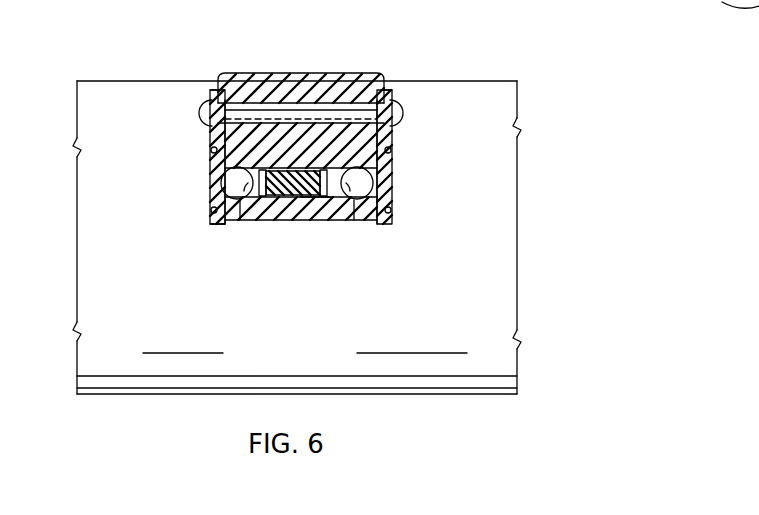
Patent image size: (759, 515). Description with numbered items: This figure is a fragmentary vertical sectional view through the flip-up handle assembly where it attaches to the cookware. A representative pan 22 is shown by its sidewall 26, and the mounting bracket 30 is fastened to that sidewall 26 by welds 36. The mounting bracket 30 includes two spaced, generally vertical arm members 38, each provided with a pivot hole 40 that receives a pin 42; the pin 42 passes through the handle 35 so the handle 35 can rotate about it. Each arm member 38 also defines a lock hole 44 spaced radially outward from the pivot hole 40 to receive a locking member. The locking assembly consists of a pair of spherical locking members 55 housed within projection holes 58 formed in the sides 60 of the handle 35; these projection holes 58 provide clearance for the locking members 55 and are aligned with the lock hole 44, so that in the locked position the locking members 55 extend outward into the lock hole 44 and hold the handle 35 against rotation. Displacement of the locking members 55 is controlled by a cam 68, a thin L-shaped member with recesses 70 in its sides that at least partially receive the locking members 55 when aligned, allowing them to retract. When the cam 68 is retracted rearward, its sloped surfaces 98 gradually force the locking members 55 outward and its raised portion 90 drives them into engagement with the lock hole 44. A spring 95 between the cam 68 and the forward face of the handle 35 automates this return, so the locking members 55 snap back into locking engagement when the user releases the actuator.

The pan 22 is at (522, 229).
The sidewall 26 is at (103, 218).
The mounting bracket 30 is at (197, 228).
The handle 35 is at (350, 66).
The welds 36 is at (397, 220).
The arm members 38 is at (207, 145).
The pivot hole 40 is at (212, 128).
The pin 42 is at (271, 105).
The lock hole 44 is at (213, 193).
The locking members 55 is at (240, 200).
The projection holes 58 is at (257, 200).
The sides 60 is at (208, 142).
The cam 68 is at (315, 210).
The recesses 70 is at (268, 172).
The raised portion 90 is at (387, 195).
The spring 95 is at (305, 165).
The sloped surfaces 98 is at (264, 196).